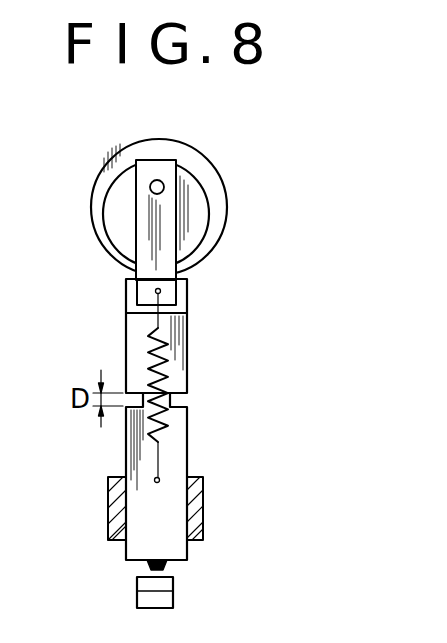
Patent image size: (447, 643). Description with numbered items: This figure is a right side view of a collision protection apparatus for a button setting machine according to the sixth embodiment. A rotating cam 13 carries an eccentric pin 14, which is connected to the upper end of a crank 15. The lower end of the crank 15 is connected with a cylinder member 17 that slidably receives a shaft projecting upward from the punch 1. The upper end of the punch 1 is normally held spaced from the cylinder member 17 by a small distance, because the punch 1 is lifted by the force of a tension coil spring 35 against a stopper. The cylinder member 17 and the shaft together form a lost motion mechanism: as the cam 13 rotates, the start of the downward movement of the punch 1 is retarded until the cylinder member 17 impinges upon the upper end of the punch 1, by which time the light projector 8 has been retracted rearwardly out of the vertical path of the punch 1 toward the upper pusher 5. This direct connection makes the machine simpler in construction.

The rotating cam 13 is at (200, 153).
The eccentric pin 14 is at (164, 186).
The crank 15 is at (170, 248).
The cylinder member 17 is at (180, 323).
The tension coil spring 35 is at (165, 367).
The punch 1 is at (177, 552).
The upper pusher 5 is at (170, 583).
The light projector 8 is at (148, 600).